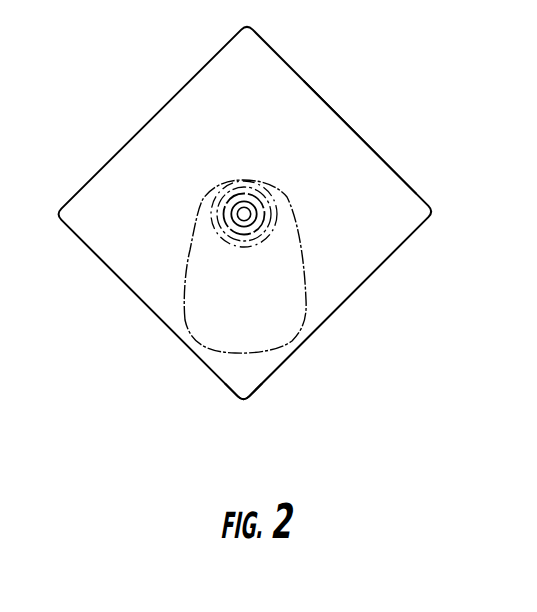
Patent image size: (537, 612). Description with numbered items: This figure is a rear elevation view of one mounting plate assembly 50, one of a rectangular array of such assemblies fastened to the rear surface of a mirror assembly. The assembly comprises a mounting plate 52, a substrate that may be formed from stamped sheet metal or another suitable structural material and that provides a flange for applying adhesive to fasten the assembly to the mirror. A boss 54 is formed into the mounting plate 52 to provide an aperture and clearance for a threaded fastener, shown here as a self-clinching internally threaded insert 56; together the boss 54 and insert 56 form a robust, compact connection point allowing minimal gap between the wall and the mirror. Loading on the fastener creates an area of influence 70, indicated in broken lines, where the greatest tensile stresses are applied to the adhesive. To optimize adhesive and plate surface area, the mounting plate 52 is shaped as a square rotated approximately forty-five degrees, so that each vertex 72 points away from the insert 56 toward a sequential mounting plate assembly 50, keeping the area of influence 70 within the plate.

The mounting plate assembly 50 is at (317, 69).
The mounting plate 52 is at (380, 165).
The boss 54 is at (243, 185).
The self-clinching internally threaded insert 56 is at (238, 204).
The area of influence 70 is at (304, 283).
The vertex 72 is at (245, 398).